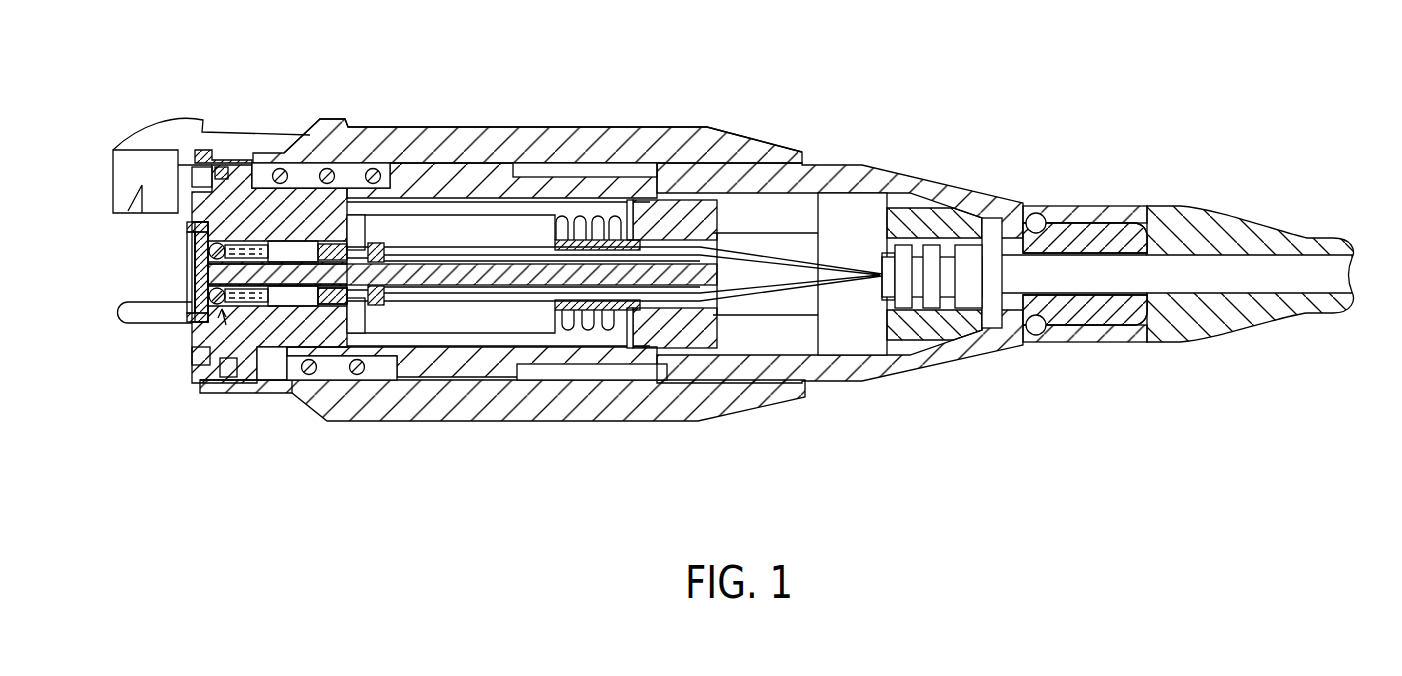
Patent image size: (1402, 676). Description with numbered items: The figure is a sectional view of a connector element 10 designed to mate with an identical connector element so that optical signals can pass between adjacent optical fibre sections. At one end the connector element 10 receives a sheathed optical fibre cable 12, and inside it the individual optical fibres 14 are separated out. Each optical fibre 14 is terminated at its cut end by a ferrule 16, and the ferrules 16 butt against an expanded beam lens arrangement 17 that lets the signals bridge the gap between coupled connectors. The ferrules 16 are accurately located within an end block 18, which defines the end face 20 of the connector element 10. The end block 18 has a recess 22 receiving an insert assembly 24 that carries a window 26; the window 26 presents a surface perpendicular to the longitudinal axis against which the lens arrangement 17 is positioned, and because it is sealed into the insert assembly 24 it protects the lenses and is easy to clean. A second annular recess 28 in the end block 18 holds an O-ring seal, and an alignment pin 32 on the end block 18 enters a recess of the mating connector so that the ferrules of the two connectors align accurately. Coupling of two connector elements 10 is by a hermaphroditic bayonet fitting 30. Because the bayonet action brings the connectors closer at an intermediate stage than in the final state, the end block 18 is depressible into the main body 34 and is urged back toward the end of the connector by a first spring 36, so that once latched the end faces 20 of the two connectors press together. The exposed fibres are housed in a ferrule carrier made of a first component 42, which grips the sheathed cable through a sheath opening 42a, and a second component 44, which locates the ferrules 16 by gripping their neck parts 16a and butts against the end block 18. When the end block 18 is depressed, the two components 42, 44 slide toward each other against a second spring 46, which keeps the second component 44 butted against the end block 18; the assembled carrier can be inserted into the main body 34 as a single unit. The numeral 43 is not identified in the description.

The connector element 10 is at (805, 98).
The sheathed optical fibre cable 12 is at (1353, 262).
The individual optical fibres 14 is at (484, 256).
The ferrule 16 is at (255, 308).
The neck part 16a is at (328, 308).
The expanded beam lens arrangement 17 is at (226, 325).
The end block 18 is at (247, 190).
The end face 20 is at (192, 342).
The recess 22 is at (212, 228).
The insert assembly 24 is at (187, 224).
The window 26 is at (193, 274).
The second annular recess 28 is at (197, 362).
The hermaphroditic bayonet fitting 30 is at (157, 110).
The alignment pin 32 is at (138, 327).
The main body 34 is at (615, 127).
The first spring 36 is at (371, 170).
The first component 42 is at (907, 335).
The sheath opening 42a is at (865, 262).
The inner shell 43 is at (713, 330).
The second component 44 is at (537, 334).
The second spring 46 is at (585, 215).